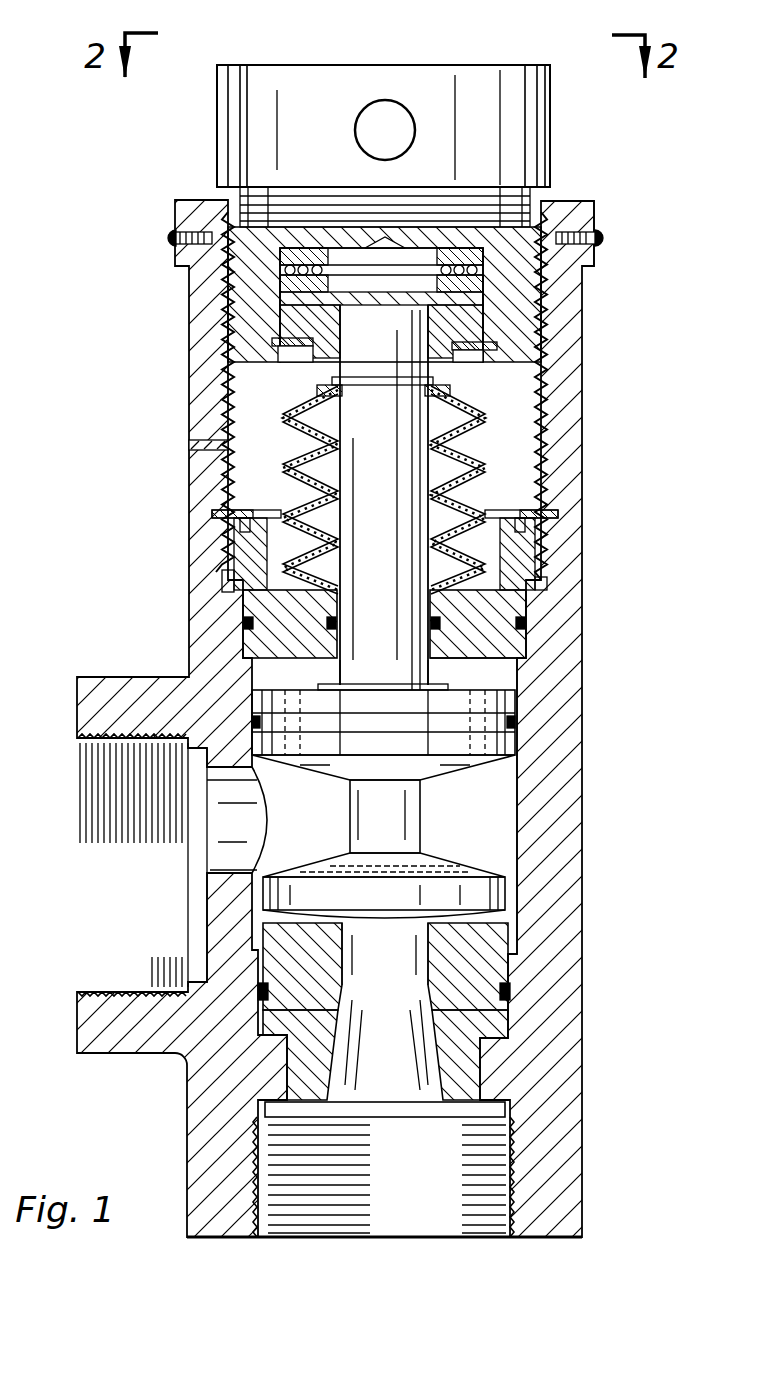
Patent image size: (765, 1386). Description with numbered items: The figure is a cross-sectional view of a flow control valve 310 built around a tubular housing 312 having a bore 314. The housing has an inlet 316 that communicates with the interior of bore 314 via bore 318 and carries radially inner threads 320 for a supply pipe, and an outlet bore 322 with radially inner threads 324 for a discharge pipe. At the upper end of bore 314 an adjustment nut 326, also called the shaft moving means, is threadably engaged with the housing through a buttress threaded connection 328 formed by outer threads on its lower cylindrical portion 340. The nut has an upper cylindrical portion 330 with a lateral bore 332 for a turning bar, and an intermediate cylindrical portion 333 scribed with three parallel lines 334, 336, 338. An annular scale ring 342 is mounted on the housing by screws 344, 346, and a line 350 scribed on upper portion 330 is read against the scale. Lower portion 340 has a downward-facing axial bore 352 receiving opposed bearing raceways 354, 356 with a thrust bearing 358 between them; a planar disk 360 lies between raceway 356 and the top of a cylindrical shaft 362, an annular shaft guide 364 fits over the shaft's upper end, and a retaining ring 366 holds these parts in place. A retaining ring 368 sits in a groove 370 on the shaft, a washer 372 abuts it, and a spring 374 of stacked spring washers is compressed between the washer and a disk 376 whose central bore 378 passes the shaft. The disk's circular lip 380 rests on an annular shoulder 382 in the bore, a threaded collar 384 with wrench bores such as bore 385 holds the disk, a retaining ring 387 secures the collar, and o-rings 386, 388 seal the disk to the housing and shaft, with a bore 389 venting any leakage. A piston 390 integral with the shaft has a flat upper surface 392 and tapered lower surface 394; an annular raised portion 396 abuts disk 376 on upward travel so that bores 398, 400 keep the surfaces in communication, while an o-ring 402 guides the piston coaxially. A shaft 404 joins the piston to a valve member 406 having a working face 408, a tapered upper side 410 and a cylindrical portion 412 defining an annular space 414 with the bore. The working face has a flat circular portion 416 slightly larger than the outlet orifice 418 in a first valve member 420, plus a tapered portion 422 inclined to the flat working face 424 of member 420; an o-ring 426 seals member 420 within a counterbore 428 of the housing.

The flow control valve 310 is at (346, 631).
The tubular housing 312 is at (566, 408).
The bore 314 is at (519, 795).
The inlet 316 is at (97, 781).
The bore 318 is at (226, 824).
The radially inner threads 320 is at (150, 983).
The outlet bore 322 is at (455, 1169).
The radially inner threads 324 is at (511, 1215).
The adjustment nut 326 is at (389, 109).
The buttress threaded connection 328 is at (436, 396).
The upper cylindrical portion 330 is at (217, 148).
The bore 332 is at (395, 112).
The intermediate cylindrical portion 333 is at (532, 193).
The line 334 is at (385, 184).
The line 336 is at (342, 208).
The line 338 is at (398, 222).
The lower cylindrical portion 340 is at (524, 314).
The annular scale ring 342 is at (597, 212).
The screw 344 is at (170, 239).
The screw 346 is at (605, 238).
The line 350 is at (250, 105).
The axial bore 352 is at (545, 383).
The bearing raceway 354 is at (389, 332).
The bearing raceway 356 is at (292, 322).
The thrust bearing 358 is at (405, 280).
The planar disk 360 is at (541, 272).
The shaft 362 is at (300, 508).
The annular shaft guide 364 is at (283, 347).
The retaining ring 366 is at (482, 366).
The retaining ring 368 is at (295, 384).
The groove 370 is at (388, 386).
The washer 372 is at (452, 430).
The spring 374 is at (474, 495).
The disk 376 is at (243, 648).
The central bore 378 is at (398, 667).
The circular lip 380 is at (539, 632).
The annular shoulder 382 is at (234, 575).
The threaded collar 384 is at (548, 580).
The bore 385 is at (240, 530).
The o-ring 386 is at (528, 660).
The retaining ring 387 is at (547, 514).
The o-ring 388 is at (528, 623).
The bore 389 is at (189, 445).
The piston 390 is at (330, 700).
The upper surface 392 is at (528, 697).
The tapered lower surface 394 is at (421, 780).
The annular raised portion 396 is at (368, 684).
The bore 398 is at (417, 717).
The bore 400 is at (520, 742).
The o-ring 402 is at (520, 722).
The shaft 404 is at (419, 822).
The valve member 406 is at (492, 862).
The working face 408 is at (510, 965).
The upper side 410 is at (392, 878).
The cylindrical portion 412 is at (492, 890).
The annular space 414 is at (507, 882).
The circular portion 416 is at (388, 918).
The outlet orifice 418 is at (432, 990).
The valve member 420 is at (512, 1070).
The tapered portion 422 is at (285, 915).
The working face 424 is at (509, 928).
The o-ring 426 is at (511, 995).
The counterbore 428 is at (287, 1048).